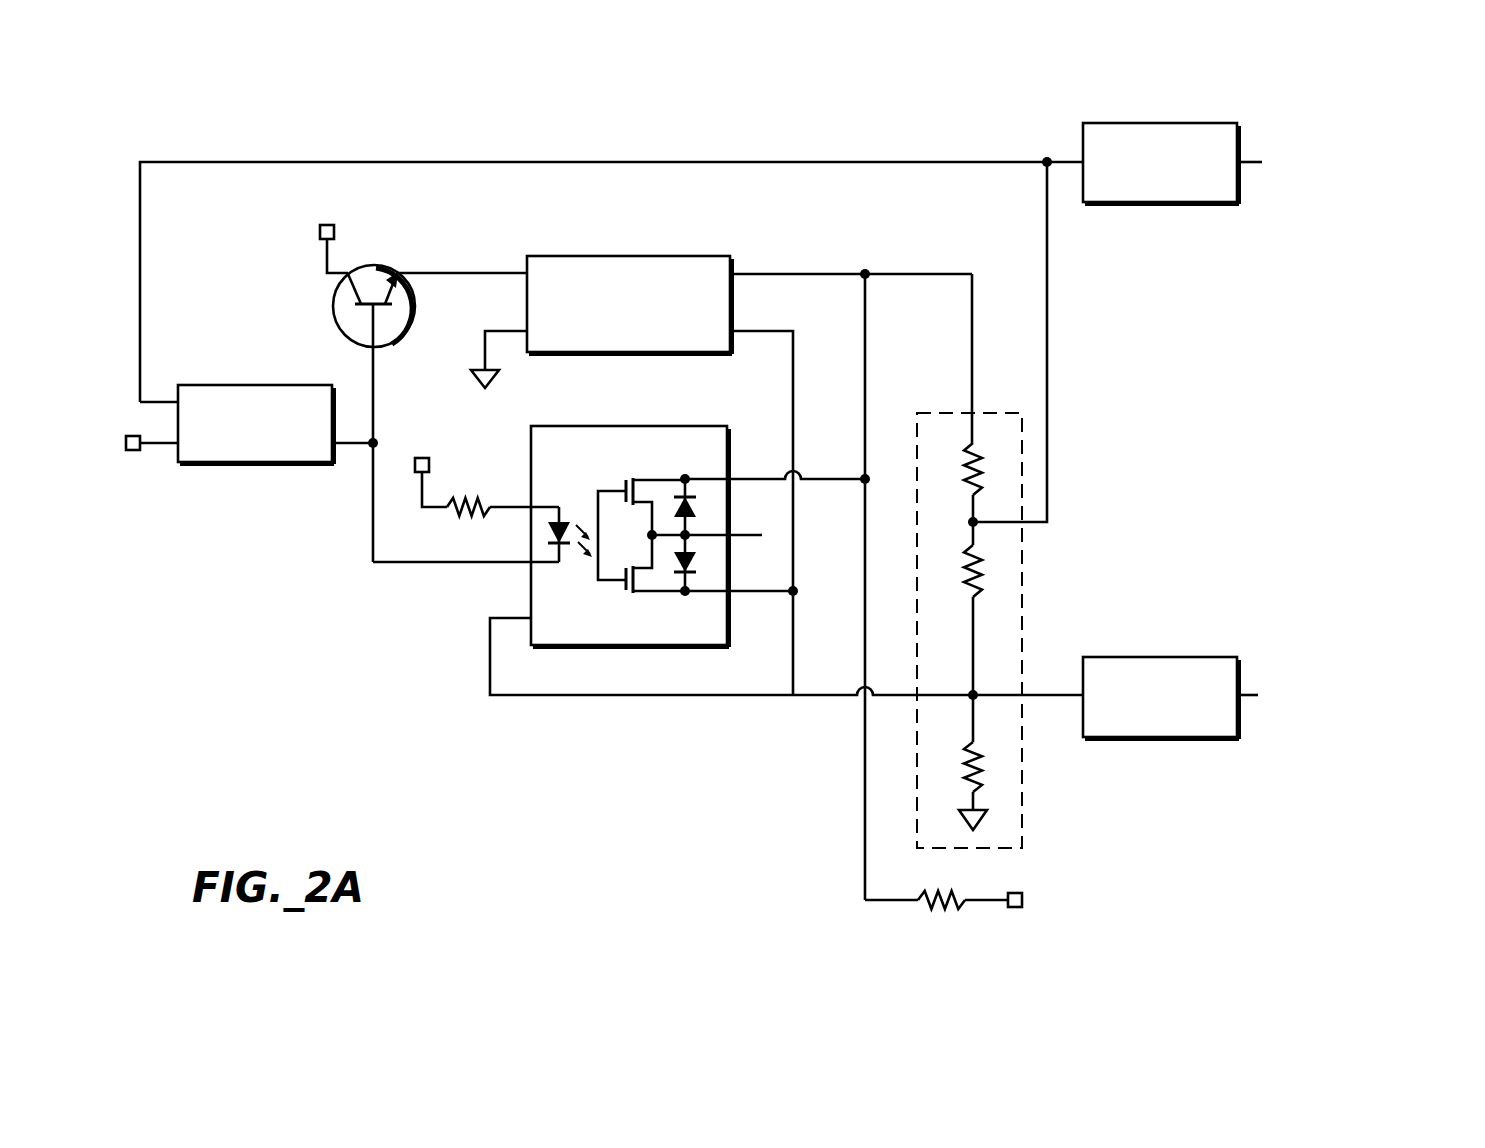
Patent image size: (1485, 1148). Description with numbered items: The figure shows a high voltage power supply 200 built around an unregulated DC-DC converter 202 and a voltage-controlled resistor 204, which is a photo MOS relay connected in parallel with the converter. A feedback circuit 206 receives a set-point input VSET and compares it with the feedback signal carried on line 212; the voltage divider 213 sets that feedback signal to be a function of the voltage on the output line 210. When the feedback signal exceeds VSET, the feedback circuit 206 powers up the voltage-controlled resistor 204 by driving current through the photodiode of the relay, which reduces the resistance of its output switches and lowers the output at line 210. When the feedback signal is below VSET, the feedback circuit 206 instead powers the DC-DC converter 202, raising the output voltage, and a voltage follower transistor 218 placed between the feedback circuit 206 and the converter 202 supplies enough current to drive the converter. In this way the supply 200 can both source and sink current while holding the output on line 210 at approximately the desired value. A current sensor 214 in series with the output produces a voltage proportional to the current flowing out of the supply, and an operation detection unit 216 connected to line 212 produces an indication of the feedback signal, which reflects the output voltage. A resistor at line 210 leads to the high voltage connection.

The high voltage power supply 200 is at (350, 92).
The DC-DC converter 202 is at (613, 256).
The voltage-controlled resistor 204 is at (575, 426).
The feedback circuit 206 is at (210, 385).
The output line 210 is at (995, 907).
The feedback signal line 212 is at (460, 162).
The voltage divider 213 is at (1022, 600).
The current sensor 214 is at (1145, 657).
The operation detection unit 216 is at (1145, 123).
The voltage follower transistor 218 is at (370, 263).